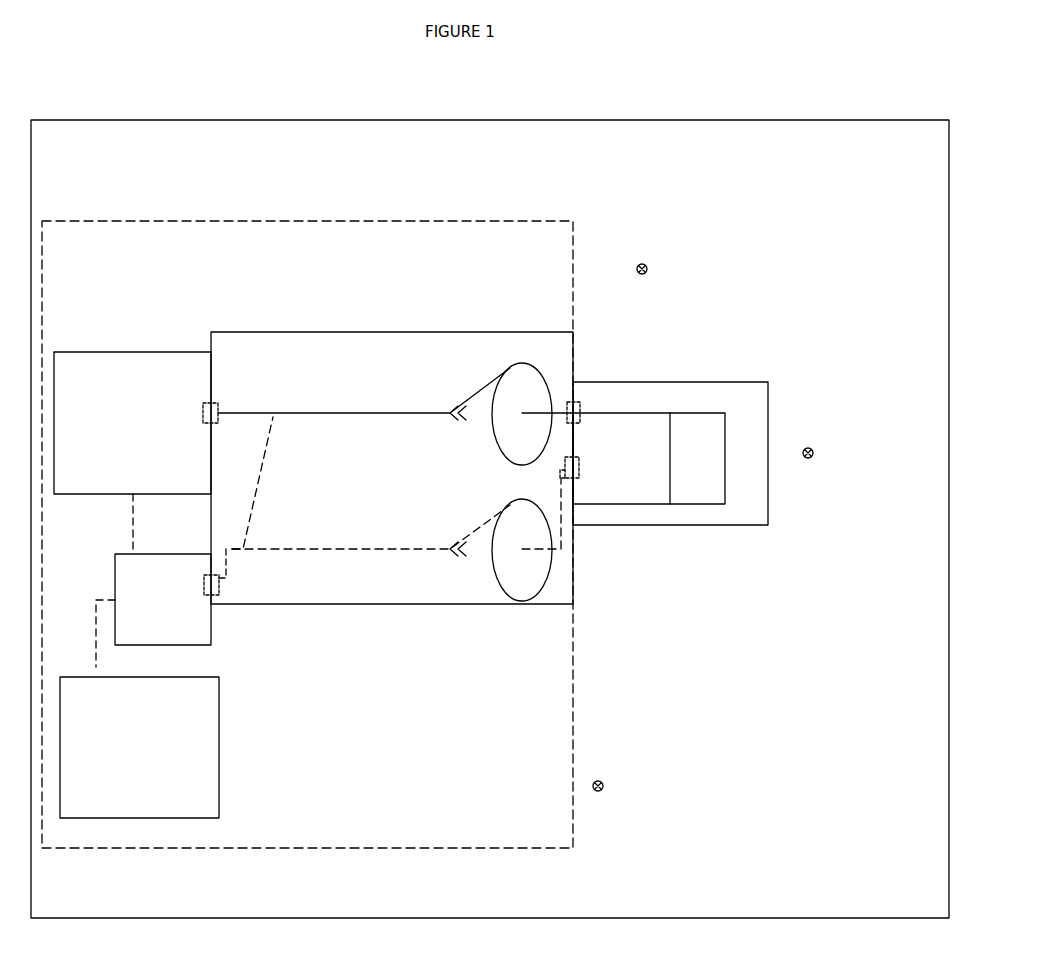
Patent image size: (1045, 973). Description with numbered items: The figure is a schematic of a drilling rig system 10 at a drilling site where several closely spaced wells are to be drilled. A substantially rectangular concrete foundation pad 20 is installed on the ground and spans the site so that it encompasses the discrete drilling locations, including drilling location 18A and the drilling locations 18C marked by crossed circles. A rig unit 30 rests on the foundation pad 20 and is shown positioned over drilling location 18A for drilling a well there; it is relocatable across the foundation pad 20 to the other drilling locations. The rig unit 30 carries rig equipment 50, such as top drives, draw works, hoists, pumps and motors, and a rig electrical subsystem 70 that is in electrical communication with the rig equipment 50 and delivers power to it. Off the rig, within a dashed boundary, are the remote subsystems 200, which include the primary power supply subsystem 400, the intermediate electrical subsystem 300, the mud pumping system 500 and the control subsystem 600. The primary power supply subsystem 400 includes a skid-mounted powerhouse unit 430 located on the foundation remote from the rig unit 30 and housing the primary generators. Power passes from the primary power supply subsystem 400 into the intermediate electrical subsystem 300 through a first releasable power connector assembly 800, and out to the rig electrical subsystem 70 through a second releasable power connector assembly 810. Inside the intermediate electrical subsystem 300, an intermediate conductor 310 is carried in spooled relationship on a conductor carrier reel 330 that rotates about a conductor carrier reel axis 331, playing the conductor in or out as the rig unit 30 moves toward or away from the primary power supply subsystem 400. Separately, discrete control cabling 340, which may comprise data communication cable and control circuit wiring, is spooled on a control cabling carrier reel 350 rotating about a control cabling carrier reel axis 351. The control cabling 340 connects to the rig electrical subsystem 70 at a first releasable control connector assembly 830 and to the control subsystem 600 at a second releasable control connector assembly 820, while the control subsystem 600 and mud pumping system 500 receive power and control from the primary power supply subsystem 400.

The drilling rig system 10 is at (394, 92).
The foundation pad 20 is at (928, 899).
The remote subsystems 200 is at (108, 221).
The primary power supply subsystem 400 is at (132, 352).
The powerhouse unit 430 is at (168, 328).
The control subsystem 600 is at (211, 625).
The mud pumping system 500 is at (219, 745).
The intermediate electrical subsystem 300 is at (438, 388).
The intermediate conductor 310 is at (352, 413).
The discrete control cabling 340 is at (352, 549).
The conductor carrier reel 330 is at (493, 440).
The conductor carrier reel axis 331 is at (520, 380).
The control cabling carrier reel 350 is at (493, 545).
The control cabling carrier reel axis 351 is at (513, 568).
The first releasable power connector assembly 800 is at (218, 405).
The second releasable power connector assembly 810 is at (565, 400).
The second releasable control connector assembly 820 is at (205, 578).
The first releasable control connector assembly 830 is at (578, 478).
The rig unit 30 is at (698, 542).
The rig equipment 50 is at (698, 413).
The rig electrical subsystem 70 is at (622, 413).
The drilling location 18C is at (645, 274).
The drilling location 18A is at (810, 458).